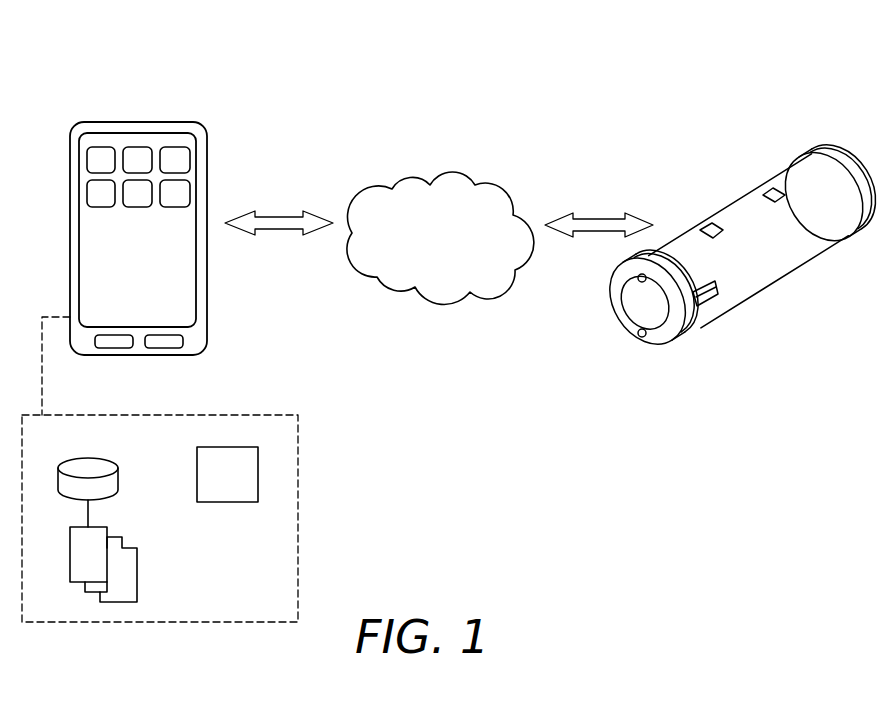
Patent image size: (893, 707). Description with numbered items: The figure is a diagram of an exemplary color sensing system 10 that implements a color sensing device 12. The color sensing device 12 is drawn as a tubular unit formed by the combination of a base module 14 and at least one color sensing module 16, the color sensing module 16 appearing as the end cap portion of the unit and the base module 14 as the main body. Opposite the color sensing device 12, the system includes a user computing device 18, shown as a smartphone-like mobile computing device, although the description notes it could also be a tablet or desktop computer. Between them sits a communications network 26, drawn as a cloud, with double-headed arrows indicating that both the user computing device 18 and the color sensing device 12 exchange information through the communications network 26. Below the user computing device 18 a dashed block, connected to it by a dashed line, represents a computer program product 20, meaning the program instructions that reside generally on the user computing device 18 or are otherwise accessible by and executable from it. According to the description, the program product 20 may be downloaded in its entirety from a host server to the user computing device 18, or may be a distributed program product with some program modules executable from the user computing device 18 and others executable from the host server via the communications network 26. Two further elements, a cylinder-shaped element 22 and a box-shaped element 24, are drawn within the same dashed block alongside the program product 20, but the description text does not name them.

The color sensing system 10 is at (234, 41).
The color sensing device 12 is at (722, 202).
The base module 14 is at (772, 262).
The color sensing module 16 is at (678, 330).
The user computing device 18 is at (111, 110).
The computer program product 20 is at (99, 527).
The database 22 is at (97, 457).
The processor 24 is at (220, 502).
The communications network 26 is at (409, 148).